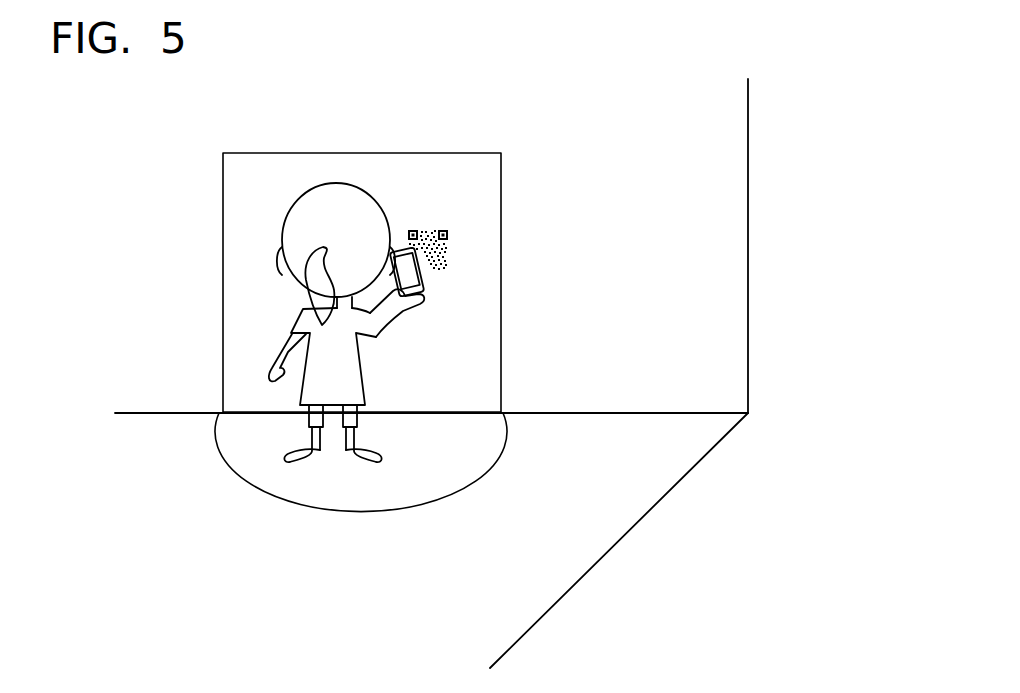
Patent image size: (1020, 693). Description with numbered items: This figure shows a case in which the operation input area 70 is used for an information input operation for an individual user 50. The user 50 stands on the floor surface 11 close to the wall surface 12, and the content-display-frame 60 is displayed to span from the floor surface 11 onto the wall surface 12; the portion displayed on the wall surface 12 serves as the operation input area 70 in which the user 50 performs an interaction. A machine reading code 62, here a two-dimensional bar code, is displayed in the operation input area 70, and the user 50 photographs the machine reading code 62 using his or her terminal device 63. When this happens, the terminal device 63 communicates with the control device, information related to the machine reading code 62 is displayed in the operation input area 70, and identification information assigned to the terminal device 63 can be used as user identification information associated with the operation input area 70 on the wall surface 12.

The floor surface 11 is at (595, 540).
The wall surface 12 is at (717, 247).
The user 50 is at (300, 183).
The content-display-frame 60 is at (427, 495).
The machine reading code 62 is at (443, 229).
The terminal device 63 is at (426, 272).
The operation input area 70 is at (361, 163).